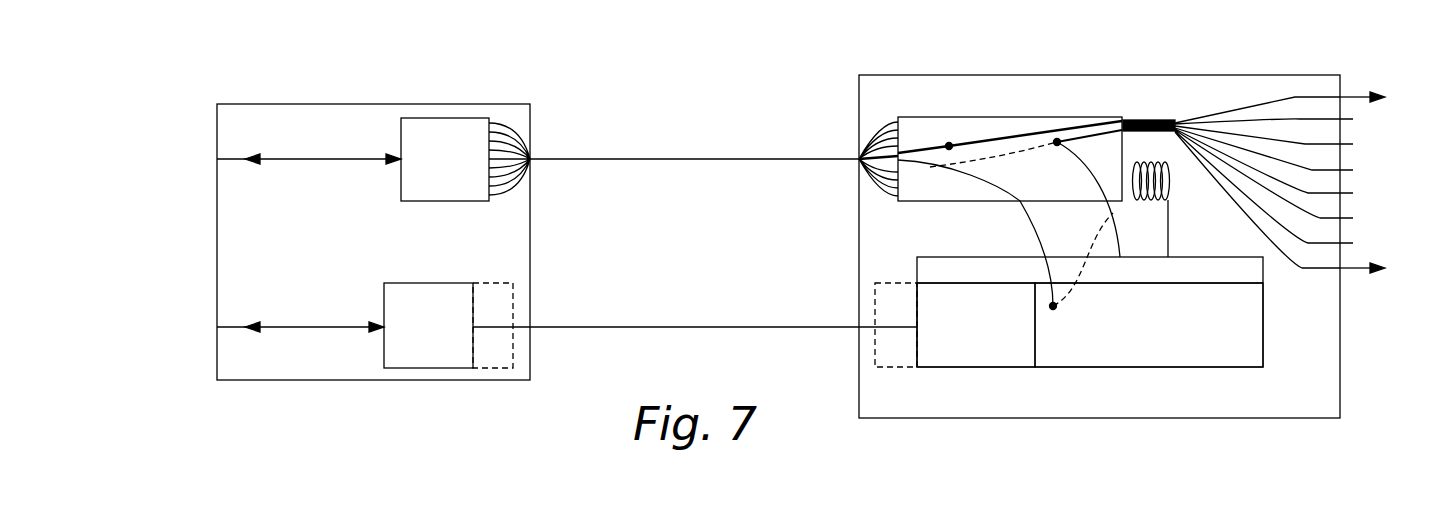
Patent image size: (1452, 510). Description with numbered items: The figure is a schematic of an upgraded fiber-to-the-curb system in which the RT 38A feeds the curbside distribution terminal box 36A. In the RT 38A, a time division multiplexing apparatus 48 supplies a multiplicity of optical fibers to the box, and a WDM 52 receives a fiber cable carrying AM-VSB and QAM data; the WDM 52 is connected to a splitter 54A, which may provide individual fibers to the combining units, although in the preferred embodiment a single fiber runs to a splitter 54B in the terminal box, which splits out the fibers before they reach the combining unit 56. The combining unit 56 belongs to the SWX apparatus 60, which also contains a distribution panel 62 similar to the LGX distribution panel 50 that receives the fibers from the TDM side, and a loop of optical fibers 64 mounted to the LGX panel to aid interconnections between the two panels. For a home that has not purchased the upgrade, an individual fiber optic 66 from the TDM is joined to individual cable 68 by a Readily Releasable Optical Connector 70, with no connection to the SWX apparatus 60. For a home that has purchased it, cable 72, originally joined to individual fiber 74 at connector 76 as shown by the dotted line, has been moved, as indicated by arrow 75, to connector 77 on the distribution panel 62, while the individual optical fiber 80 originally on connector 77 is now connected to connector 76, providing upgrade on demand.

The RT 38A is at (457, 380).
The time division multiplexing apparatus 48 is at (443, 193).
The WDM (wave division multiplexer) 52 is at (403, 289).
The splitter 54A is at (493, 295).
The distribution terminal box 36A is at (1250, 418).
The individual fiber optic 66 is at (922, 152).
The cable 72 is at (922, 157).
The LGX distribution panel 50 is at (978, 125).
The Readily Releasable Optical Connector 70 is at (949, 133).
The individual cable 68 is at (1013, 123).
The individual fiber 74 is at (1083, 133).
The Readily Releasable Optical Connector 76 is at (1055, 150).
The arrow 75 is at (1008, 188).
The connector 77 is at (1055, 313).
The individual optical fiber 80 is at (1112, 168).
The loop of optical fibers 64 is at (1167, 182).
The SWX apparatus 60 is at (1124, 332).
The combining unit 56 is at (972, 353).
The distribution panel 62 is at (1137, 365).
The splitter 54B is at (898, 353).